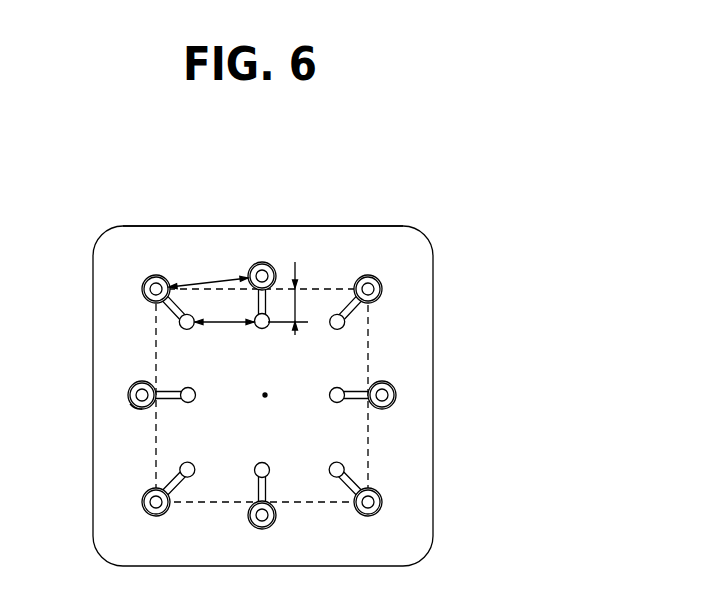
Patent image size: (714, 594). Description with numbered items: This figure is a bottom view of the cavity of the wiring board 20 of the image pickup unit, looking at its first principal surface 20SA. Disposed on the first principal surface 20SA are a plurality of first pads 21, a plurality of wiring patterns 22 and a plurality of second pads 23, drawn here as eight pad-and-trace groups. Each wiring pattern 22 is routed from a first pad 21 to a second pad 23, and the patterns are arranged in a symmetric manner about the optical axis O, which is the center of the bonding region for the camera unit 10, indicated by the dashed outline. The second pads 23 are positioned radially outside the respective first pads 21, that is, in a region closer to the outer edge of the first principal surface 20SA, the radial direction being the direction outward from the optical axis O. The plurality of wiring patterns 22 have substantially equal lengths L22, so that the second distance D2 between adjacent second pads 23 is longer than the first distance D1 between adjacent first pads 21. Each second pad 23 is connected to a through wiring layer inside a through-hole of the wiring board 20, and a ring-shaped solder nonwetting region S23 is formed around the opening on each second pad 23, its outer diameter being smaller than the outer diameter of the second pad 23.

The wiring board 20 is at (433, 273).
The first principal surface 20SA is at (362, 245).
The camera unit 10 is at (368, 355).
The first pad 21 is at (188, 388).
The wiring pattern 22 is at (171, 387).
The second pad 23 is at (128, 394).
The solder nonwetting region S23 is at (134, 410).
The optical axis O is at (265, 395).
The first distance D1 is at (212, 322).
The second distance D2 is at (203, 280).
The length of wiring pattern L22 is at (297, 310).